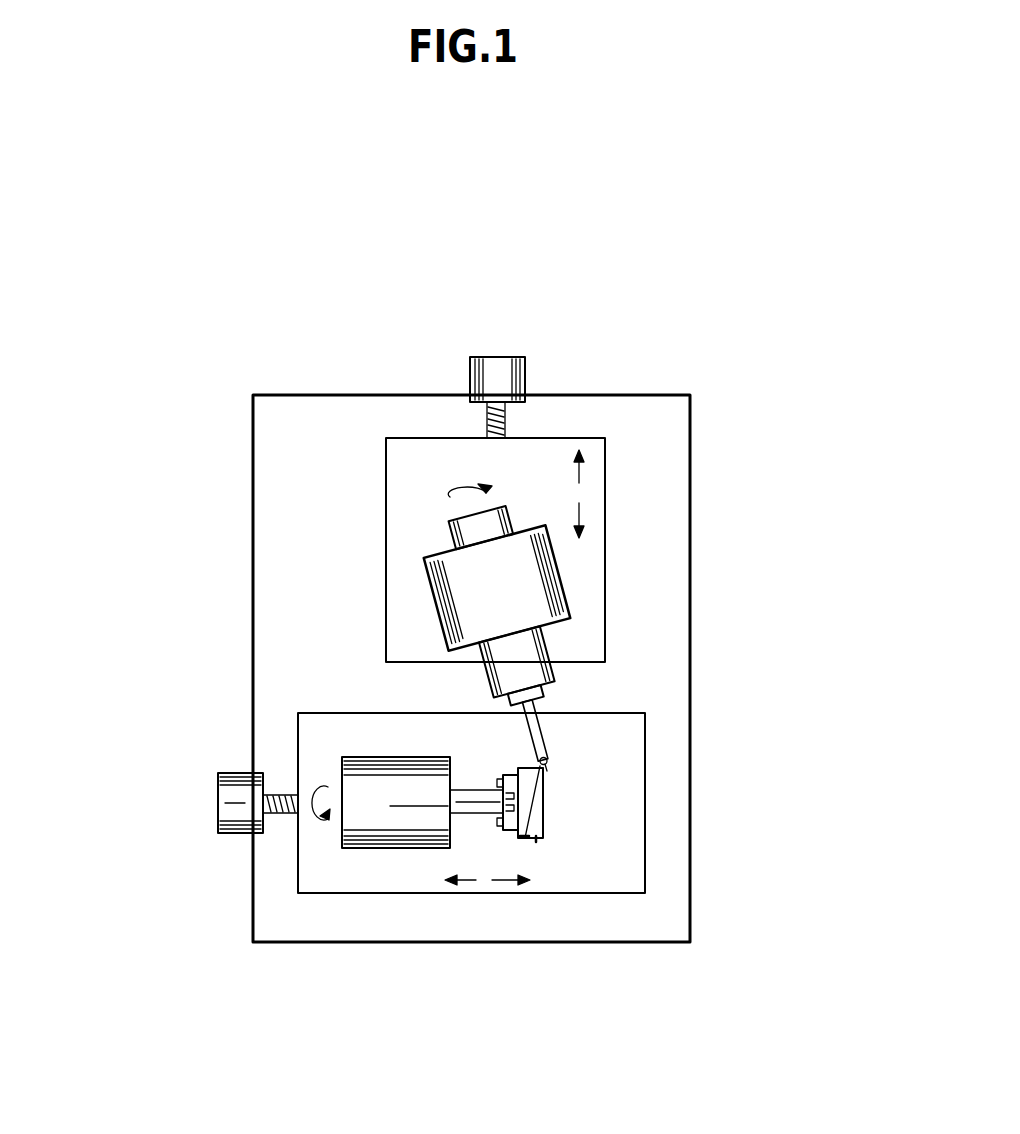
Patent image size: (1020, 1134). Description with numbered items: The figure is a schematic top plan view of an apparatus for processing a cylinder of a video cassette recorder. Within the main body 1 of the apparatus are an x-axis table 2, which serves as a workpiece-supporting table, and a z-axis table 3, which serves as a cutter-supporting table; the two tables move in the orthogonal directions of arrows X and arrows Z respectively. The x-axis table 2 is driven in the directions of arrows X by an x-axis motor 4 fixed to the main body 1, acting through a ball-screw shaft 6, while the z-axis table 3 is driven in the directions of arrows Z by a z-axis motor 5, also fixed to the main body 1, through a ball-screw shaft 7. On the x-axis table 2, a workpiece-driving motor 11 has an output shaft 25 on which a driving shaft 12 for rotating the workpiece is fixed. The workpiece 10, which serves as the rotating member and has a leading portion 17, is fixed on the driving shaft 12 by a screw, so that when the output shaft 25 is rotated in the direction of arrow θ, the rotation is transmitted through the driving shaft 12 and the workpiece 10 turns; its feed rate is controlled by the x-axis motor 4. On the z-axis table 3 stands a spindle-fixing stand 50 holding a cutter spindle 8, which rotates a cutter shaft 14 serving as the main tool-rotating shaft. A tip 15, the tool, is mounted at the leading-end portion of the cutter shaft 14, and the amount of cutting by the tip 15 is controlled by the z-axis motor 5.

The main body 1 is at (625, 395).
The x-axis table 2 is at (437, 893).
The z-axis table 3 is at (395, 477).
The x-axis motor 4 is at (226, 833).
The z-axis motor 5 is at (473, 357).
The ball-screw shaft 6 is at (279, 814).
The ball-screw shaft 7 is at (508, 422).
The cutter spindle 8 is at (547, 642).
The workpiece 10 is at (540, 840).
The workpiece-driving motor 11 is at (357, 772).
The driving shaft 12 is at (505, 777).
The cutter shaft 14 is at (540, 733).
The tip 15 is at (548, 762).
The leading portion 17 is at (548, 802).
The output shaft 25 is at (440, 848).
The spindle-fixing stand 50 is at (560, 567).